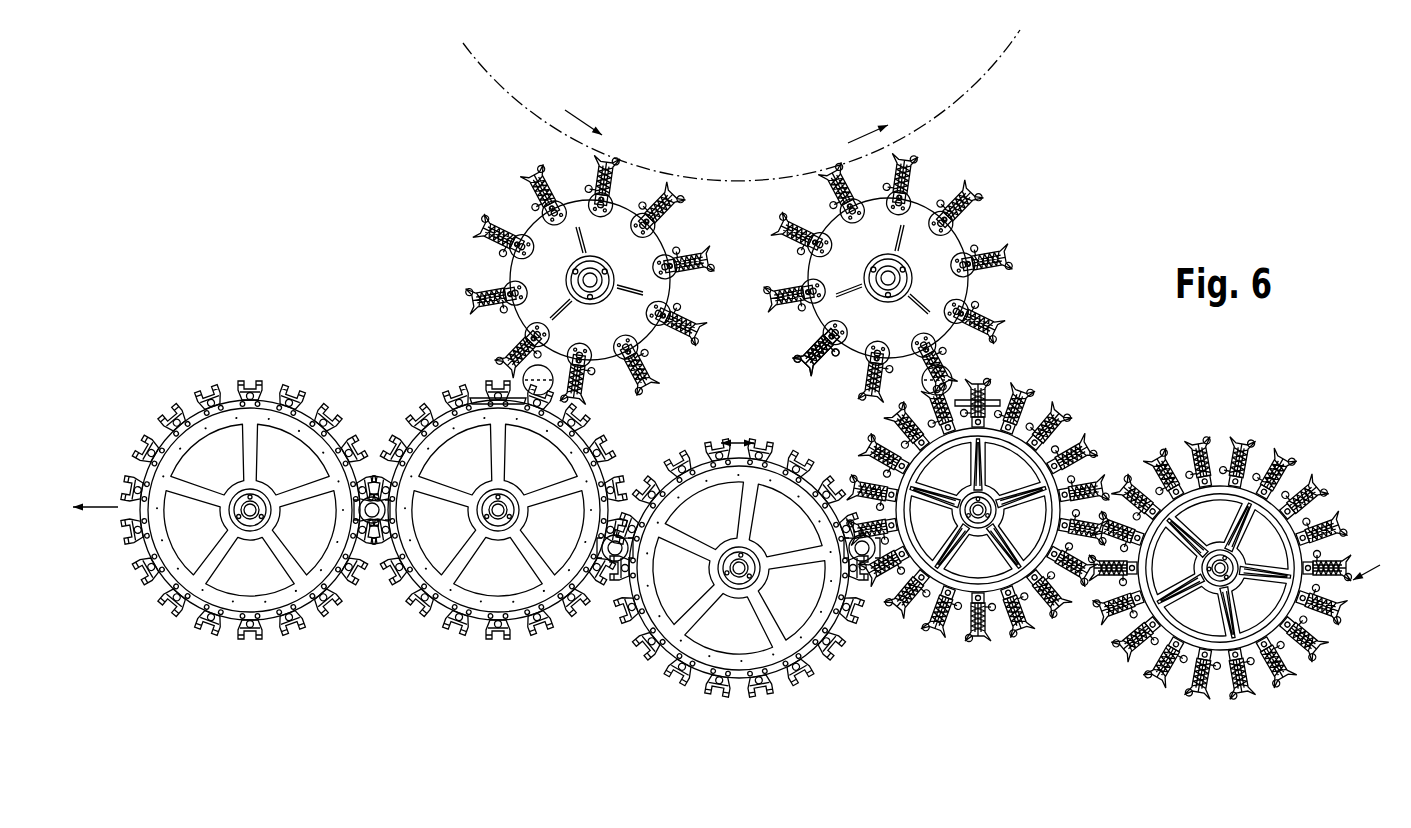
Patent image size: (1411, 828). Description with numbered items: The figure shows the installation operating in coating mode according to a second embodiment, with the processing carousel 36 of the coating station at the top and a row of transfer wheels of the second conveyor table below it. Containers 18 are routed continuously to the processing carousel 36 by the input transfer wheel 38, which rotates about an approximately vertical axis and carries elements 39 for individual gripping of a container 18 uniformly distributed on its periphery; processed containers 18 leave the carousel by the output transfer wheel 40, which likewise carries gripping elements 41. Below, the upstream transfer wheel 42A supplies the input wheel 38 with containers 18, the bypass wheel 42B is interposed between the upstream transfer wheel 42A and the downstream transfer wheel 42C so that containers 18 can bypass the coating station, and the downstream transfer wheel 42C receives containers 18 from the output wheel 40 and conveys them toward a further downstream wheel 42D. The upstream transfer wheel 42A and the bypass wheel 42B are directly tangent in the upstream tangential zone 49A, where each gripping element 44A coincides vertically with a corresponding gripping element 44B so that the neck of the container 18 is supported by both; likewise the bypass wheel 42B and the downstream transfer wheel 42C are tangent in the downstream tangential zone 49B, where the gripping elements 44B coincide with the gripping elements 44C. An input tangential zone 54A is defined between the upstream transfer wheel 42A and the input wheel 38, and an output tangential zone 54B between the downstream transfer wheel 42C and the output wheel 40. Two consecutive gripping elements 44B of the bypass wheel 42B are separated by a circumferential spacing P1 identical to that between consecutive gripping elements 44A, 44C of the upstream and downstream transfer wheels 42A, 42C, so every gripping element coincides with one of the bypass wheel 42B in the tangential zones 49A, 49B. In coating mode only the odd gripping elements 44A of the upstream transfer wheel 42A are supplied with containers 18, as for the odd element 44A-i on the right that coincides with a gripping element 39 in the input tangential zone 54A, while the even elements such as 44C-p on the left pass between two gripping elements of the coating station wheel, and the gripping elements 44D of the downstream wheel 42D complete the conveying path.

The processing carousel 36 is at (945, 85).
The input transfer wheel 38 is at (924, 277).
The gripping elements of the input wheel 39 is at (924, 277).
The output transfer wheel 40 is at (561, 273).
The gripping elements of the output wheel 41 is at (564, 279).
The upstream transfer wheel 42A is at (977, 550).
The bypass wheel 42B is at (738, 592).
The downstream transfer wheel 42C is at (498, 549).
The downstream wheel 42D is at (226, 544).
The gripping elements of the upstream transfer wheel 44A is at (977, 531).
The gripping elements of the bypass wheel 44B is at (738, 572).
The gripping elements of the downstream transfer wheel 44C is at (498, 533).
The holder of wheel 42D 44D is at (250, 530).
The odd gripping element of the upstream transfer wheel 44A-i is at (983, 400).
The even gripping element of the downstream transfer wheel 44C-p is at (524, 378).
The upstream tangential zone 49A is at (861, 562).
The downstream tangential zone 49B is at (612, 570).
The input tangential zone 54A is at (947, 373).
The output tangential zone 54B is at (525, 358).
The container 18 is at (795, 368).
The circumferential spacing P1 is at (739, 440).